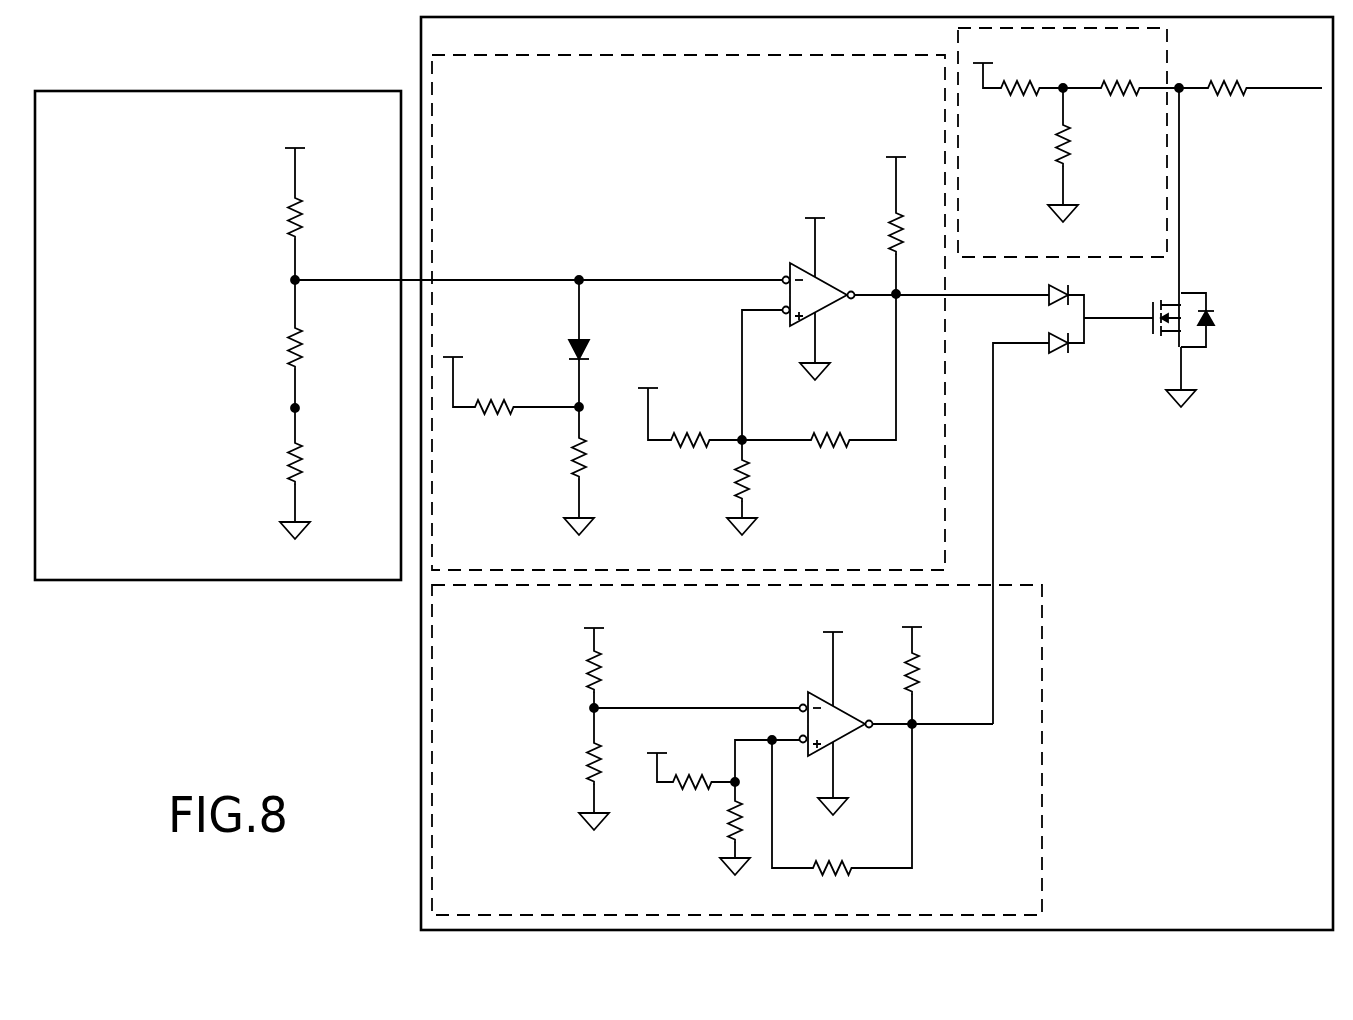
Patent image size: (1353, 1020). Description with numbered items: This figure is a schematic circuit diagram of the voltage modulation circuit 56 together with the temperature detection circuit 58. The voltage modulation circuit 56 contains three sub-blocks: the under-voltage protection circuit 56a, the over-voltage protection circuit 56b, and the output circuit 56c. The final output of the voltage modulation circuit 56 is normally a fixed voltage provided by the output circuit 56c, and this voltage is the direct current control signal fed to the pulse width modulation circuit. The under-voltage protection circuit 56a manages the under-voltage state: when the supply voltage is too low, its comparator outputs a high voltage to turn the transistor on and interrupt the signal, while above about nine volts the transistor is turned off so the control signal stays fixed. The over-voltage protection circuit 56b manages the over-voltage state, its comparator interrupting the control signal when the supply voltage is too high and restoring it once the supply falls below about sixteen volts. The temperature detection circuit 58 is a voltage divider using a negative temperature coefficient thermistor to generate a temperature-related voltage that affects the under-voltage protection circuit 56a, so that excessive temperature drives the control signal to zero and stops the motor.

The voltage modulation circuit 56 is at (1235, 793).
The under-voltage protection circuit 56a is at (676, 162).
The over-voltage protection circuit 56b is at (561, 787).
The output circuit 56c is at (990, 208).
The temperature detection circuit 58 is at (196, 361).